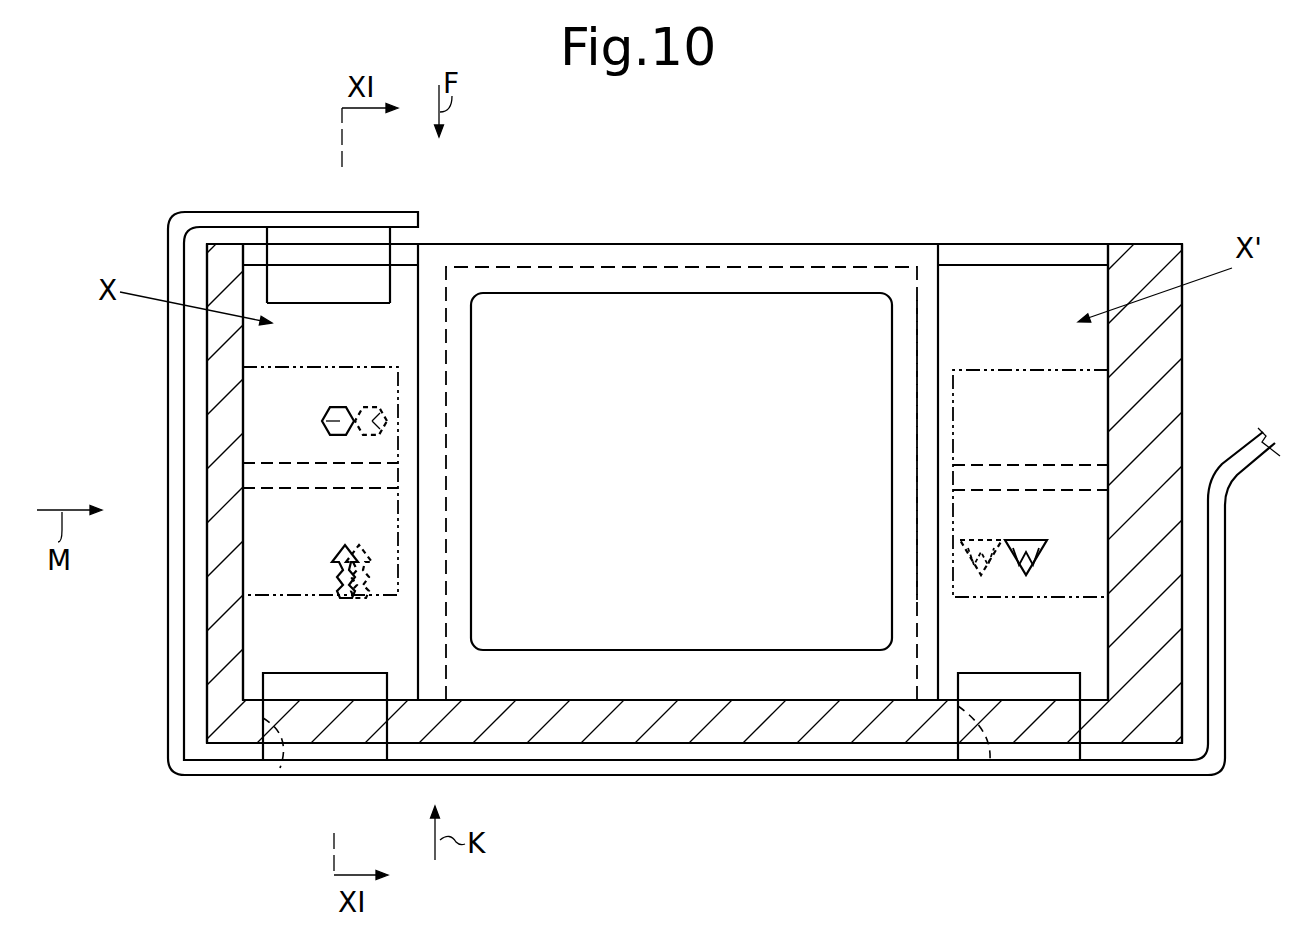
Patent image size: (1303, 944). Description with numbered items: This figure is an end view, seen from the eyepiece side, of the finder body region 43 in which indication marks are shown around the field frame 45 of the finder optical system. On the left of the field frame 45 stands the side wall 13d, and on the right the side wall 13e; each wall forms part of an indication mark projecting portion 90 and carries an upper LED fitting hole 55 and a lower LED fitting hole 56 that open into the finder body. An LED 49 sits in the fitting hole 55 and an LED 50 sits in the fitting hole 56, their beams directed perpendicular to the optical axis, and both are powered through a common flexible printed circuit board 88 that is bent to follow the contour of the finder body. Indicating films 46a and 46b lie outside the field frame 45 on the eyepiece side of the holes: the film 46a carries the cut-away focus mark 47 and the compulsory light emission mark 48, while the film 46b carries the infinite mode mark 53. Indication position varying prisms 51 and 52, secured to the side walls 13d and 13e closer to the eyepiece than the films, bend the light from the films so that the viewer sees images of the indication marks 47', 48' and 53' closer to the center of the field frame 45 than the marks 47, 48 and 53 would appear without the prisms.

The housing 43 is at (168, 417).
The side wall 13d is at (218, 607).
The side wall 13e is at (1153, 418).
The flexible printed circuit board 88 is at (1218, 563).
The LED 49 is at (360, 235).
The indication mark projecting portion 90 is at (233, 237).
The LED fitting hole 55 is at (260, 274).
The field frame 45 is at (607, 293).
The indicating film 46a is at (418, 337).
The indicating film 46b is at (958, 320).
The indication position varying prism 51 is at (243, 392).
The indication position varying prism 52 is at (1072, 400).
The focus mark 47 is at (231, 443).
The image of indication mark 47' is at (457, 412).
The indication mark 48 is at (233, 571).
The image of indication mark 48' is at (454, 571).
The indication mark 53 is at (922, 589).
The image of indication mark 53' is at (906, 562).
The LED 50 is at (313, 688).
The LED fitting hole 56 is at (280, 768).